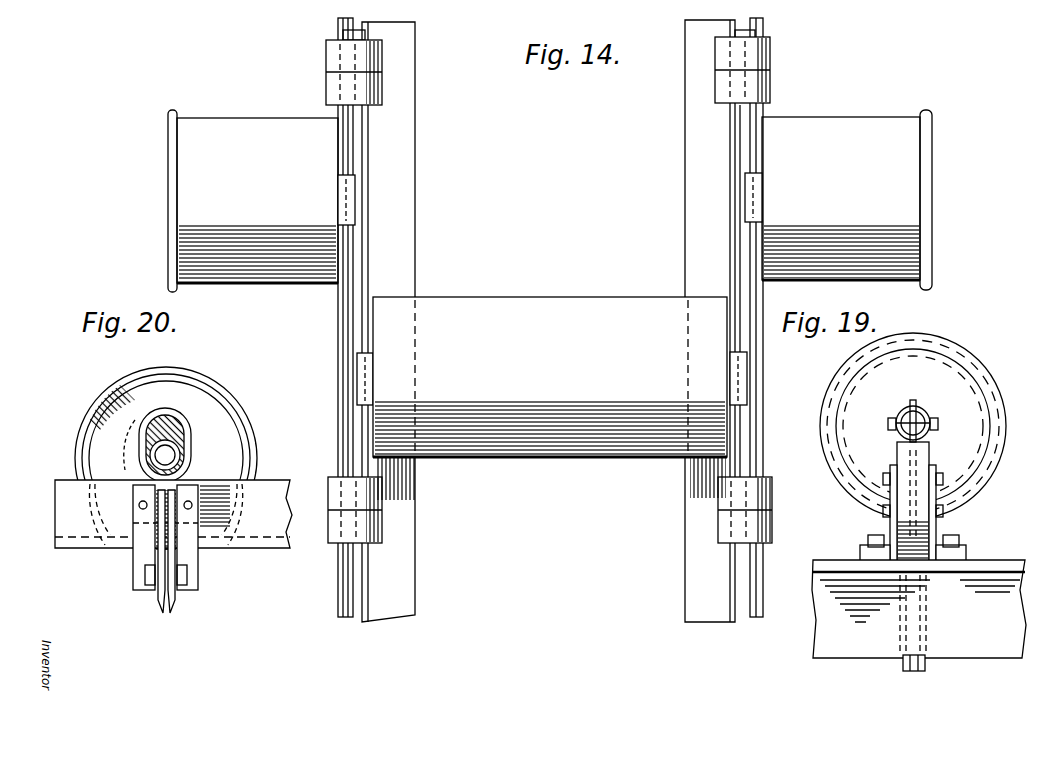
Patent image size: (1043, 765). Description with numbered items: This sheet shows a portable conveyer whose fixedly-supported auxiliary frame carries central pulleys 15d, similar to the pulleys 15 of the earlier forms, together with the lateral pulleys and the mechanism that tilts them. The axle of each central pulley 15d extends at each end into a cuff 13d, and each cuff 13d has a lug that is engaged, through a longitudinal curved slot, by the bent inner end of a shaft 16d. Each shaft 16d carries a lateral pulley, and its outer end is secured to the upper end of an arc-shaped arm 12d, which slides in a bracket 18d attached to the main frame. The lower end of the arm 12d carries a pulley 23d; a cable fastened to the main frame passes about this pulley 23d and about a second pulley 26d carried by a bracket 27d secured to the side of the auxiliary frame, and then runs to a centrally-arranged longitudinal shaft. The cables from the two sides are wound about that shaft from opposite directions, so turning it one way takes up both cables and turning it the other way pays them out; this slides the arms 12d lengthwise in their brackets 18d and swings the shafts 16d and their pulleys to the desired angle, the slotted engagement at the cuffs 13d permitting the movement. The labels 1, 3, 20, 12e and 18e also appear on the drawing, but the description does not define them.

In FIG. 19, the beam 1 is at (919, 609).
In FIG. 14, the post / rail 3 is at (548, 321).
In FIG. 20, the post / rail 3 is at (173, 514).
In FIG. 19, the arc-shaped arm 12d is at (920, 456).
In FIG. 14, the clamp block 12e is at (355, 205).
In FIG. 20, the cuff 13d is at (195, 428).
In FIG. 14, the pulley 15 is at (550, 398).
In FIG. 20, the central pulley 15d is at (88, 455).
In FIG. 20, the shaft 16d is at (180, 445).
In FIG. 19, the shaft 16d is at (926, 414).
In FIG. 19, the bracket 18d is at (940, 540).
In FIG. 14, the rod 18e is at (340, 306).
In FIG. 19, the rod 18e is at (794, 438).
In FIG. 14, the roll 20 is at (550, 201).
In FIG. 20, the roll 20 is at (222, 398).
In FIG. 19, the roll 20 is at (985, 385).
In FIG. 19, the pulley 23d is at (915, 671).
In FIG. 20, the second pulley 26d is at (158, 600).
In FIG. 20, the bracket 27d is at (140, 562).